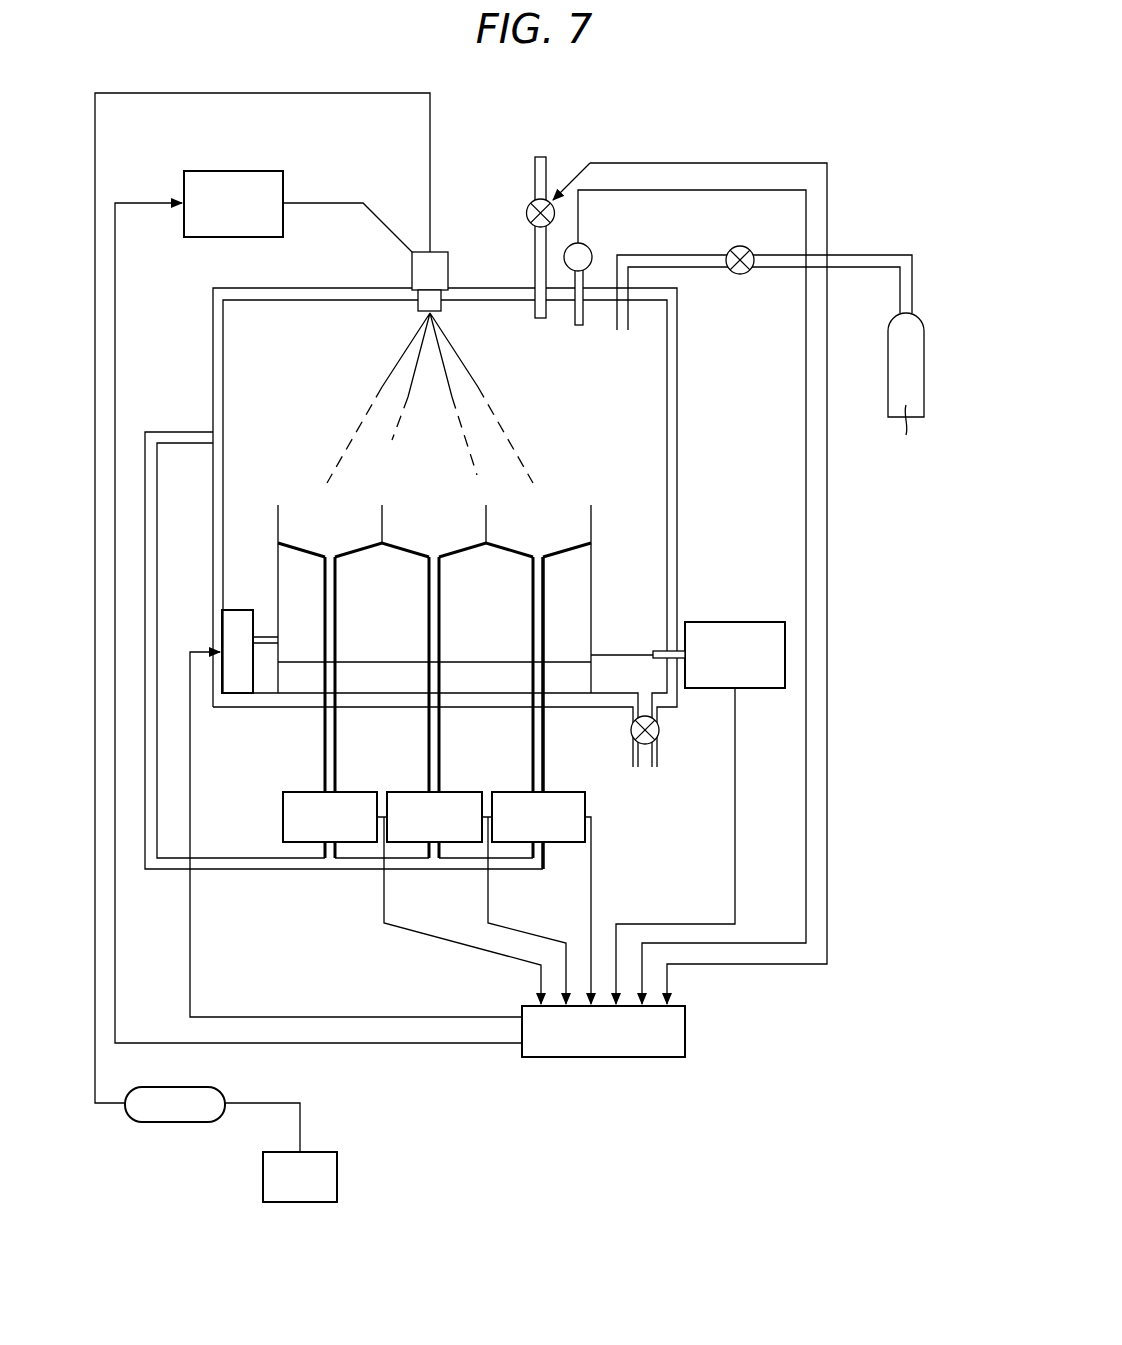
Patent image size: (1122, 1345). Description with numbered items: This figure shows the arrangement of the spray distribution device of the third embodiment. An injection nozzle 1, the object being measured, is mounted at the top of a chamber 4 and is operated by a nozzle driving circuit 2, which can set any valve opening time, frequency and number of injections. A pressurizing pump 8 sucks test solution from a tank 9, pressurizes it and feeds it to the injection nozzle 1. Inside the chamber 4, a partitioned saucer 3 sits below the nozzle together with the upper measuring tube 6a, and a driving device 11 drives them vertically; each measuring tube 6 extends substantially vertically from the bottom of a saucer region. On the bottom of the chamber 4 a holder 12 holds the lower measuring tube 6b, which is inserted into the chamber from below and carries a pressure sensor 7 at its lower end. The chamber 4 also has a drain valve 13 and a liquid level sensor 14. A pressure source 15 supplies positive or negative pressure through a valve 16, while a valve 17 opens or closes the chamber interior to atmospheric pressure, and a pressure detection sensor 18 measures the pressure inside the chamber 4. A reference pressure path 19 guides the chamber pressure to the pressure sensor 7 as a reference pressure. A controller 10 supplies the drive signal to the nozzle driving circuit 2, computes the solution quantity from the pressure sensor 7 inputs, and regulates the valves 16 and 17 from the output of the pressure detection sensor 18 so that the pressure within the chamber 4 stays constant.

The injection nozzle 1 is at (411, 254).
The nozzle driving circuit 2 is at (233, 170).
The saucer 3 is at (573, 553).
The chamber 4 is at (677, 533).
The measuring tube 6 is at (530, 730).
The upper measuring tube 6a is at (544, 555).
The lower measuring tube 6b is at (547, 745).
The pressure sensor 7 is at (587, 808).
The pressurizing pump 8 is at (175, 1122).
The tank 9 is at (338, 1175).
The controller 10 is at (688, 1030).
The driving device 11 is at (244, 608).
The holder 12 is at (570, 673).
The drain valve 13 is at (660, 730).
The liquid level sensor 14 is at (735, 620).
The pressure source 15 is at (888, 380).
The valve 16 is at (740, 275).
The valve 17 is at (525, 212).
The pressure detection sensor 18 is at (586, 250).
The reference pressure path 19 is at (158, 875).